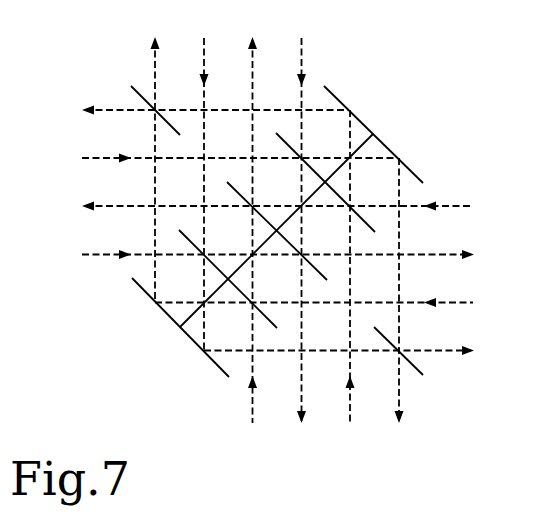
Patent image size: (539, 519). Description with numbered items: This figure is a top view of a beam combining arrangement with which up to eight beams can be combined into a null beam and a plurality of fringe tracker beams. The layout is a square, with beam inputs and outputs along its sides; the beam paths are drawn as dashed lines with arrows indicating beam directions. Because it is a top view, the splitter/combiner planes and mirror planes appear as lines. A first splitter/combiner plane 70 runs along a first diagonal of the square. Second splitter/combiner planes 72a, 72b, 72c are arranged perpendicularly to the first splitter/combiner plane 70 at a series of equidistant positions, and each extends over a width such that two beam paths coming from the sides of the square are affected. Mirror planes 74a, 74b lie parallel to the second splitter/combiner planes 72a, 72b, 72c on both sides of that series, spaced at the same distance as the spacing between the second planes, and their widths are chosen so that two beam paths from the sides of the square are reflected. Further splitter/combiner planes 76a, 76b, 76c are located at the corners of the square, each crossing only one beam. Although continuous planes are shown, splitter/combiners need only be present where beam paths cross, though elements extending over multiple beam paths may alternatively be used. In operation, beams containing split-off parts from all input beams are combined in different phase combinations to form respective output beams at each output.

The first splitter/combiner plane 70 is at (306, 202).
The second splitter/combiner plane 72a is at (190, 240).
The second splitter/combiner plane 72b is at (245, 198).
The second splitter/combiner plane 72c is at (288, 142).
The mirror plane 74a is at (409, 168).
The mirror plane 74b is at (212, 363).
The further splitter/combiner plane 76a is at (133, 97).
The further splitter/combiner plane 76b is at (420, 368).
The further splitter/combiner plane 76c is at (8, 158).